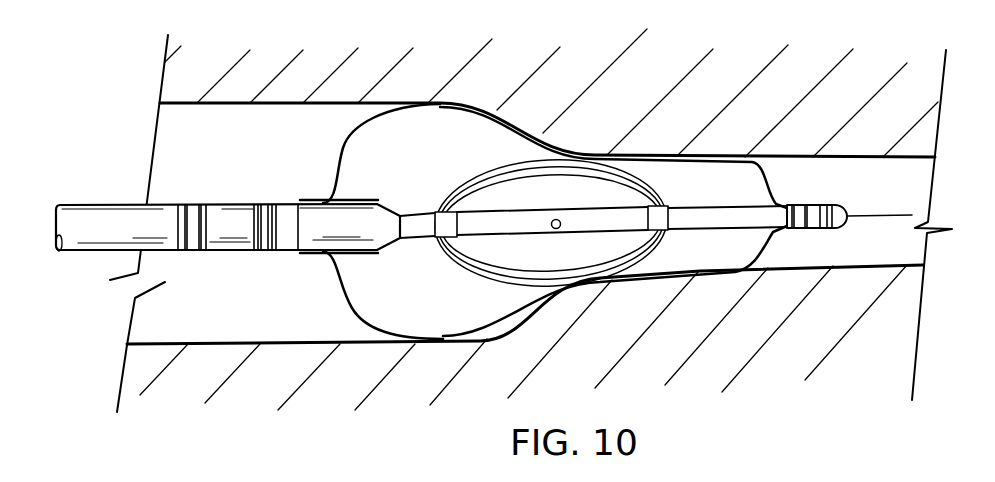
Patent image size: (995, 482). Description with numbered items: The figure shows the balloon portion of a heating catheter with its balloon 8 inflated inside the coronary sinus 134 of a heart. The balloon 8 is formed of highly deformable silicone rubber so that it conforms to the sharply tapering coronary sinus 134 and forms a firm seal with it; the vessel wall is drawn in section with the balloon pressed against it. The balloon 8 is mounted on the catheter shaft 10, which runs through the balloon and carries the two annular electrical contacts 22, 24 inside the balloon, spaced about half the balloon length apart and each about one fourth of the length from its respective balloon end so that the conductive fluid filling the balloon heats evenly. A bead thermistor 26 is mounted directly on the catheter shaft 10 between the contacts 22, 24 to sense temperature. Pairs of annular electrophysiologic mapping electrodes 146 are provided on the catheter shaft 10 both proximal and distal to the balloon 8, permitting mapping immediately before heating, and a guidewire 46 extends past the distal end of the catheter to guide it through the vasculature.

The balloon 8 is at (760, 165).
The catheter shaft 10 is at (229, 251).
The annular electrical contact 22 is at (440, 234).
The annular electrical contact 24 is at (668, 232).
The bead thermistor 26 is at (548, 226).
The guidewire 46 is at (869, 218).
The coronary sinus 134 is at (258, 104).
The electrophysiologic mapping electrode 146 is at (211, 217).